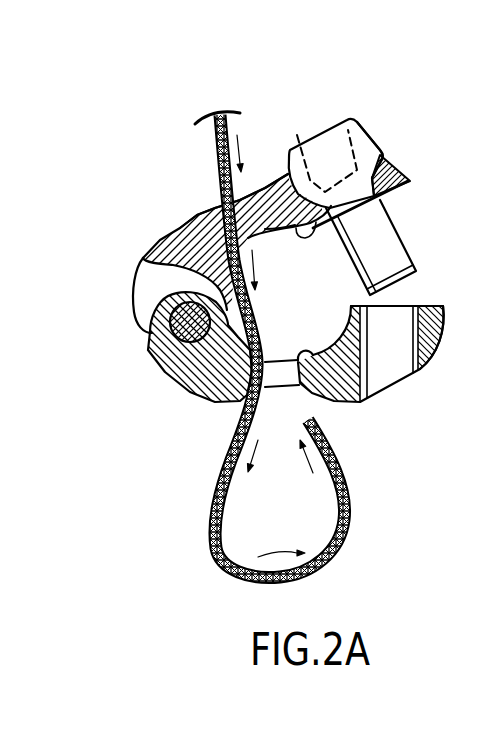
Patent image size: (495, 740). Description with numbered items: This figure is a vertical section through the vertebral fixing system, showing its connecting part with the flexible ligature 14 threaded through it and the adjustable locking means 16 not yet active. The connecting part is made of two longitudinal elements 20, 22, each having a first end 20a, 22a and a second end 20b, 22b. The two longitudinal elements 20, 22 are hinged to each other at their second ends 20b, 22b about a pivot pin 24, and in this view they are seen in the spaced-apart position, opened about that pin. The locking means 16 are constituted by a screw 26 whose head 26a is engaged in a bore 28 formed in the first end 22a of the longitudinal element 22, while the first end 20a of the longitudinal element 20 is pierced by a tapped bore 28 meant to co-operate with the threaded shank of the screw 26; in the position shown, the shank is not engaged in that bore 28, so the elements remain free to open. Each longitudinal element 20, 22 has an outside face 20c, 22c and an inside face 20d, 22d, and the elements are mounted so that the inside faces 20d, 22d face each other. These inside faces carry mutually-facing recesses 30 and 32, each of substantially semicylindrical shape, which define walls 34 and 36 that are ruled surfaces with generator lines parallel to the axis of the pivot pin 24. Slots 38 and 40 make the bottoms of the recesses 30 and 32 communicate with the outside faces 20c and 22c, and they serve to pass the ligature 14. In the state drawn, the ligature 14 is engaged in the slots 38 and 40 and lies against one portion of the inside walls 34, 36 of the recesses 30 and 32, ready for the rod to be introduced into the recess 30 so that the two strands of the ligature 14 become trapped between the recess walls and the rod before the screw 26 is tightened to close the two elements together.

The flexible ligature 14 is at (352, 522).
The adjustable locking means 16 is at (287, 305).
The longitudinal element 20 is at (197, 398).
The first end of longitudinal element 20a is at (447, 318).
The second end of longitudinal element 20b is at (170, 366).
The outside face 20c is at (345, 405).
The inside face 20d is at (430, 304).
The longitudinal element 22 is at (177, 228).
The first end of longitudinal element 22a is at (425, 160).
The second end of longitudinal element 22b is at (150, 274).
The outside face 22c is at (264, 186).
The inside face 22d is at (303, 230).
The pivot pin 24 is at (170, 324).
The screw 26 is at (320, 143).
The head of screw 26a is at (367, 142).
The bore 28 is at (350, 266).
The recess 30 is at (342, 330).
The recess 32 is at (286, 226).
The wall 34 is at (293, 373).
The wall 36 is at (198, 224).
The slot 38 is at (291, 362).
The slot 40 is at (222, 194).